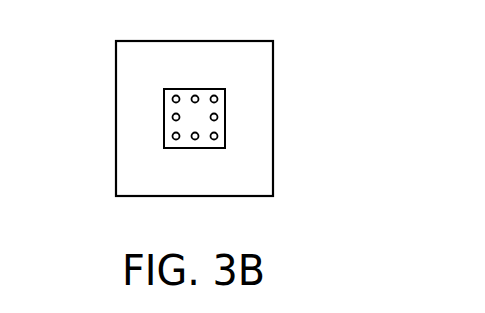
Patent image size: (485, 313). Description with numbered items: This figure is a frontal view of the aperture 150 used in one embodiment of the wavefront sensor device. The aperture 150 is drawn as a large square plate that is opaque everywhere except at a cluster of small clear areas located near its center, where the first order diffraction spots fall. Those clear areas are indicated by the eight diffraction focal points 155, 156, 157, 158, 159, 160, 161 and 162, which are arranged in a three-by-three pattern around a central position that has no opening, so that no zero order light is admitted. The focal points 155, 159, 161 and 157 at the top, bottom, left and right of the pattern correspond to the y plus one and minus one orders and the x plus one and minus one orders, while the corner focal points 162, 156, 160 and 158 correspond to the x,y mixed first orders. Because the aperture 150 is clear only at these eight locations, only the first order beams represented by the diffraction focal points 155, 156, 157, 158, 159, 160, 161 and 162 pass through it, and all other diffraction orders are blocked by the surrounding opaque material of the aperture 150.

The aperture 150 is at (116, 70).
The diffraction focal point 155 is at (195, 96).
The diffraction focal point 156 is at (218, 99).
The diffraction focal point 157 is at (218, 117).
The diffraction focal point 158 is at (218, 136).
The diffraction focal point 159 is at (195, 140).
The diffraction focal point 160 is at (173, 136).
The diffraction focal point 161 is at (173, 117).
The diffraction focal point 162 is at (176, 96).